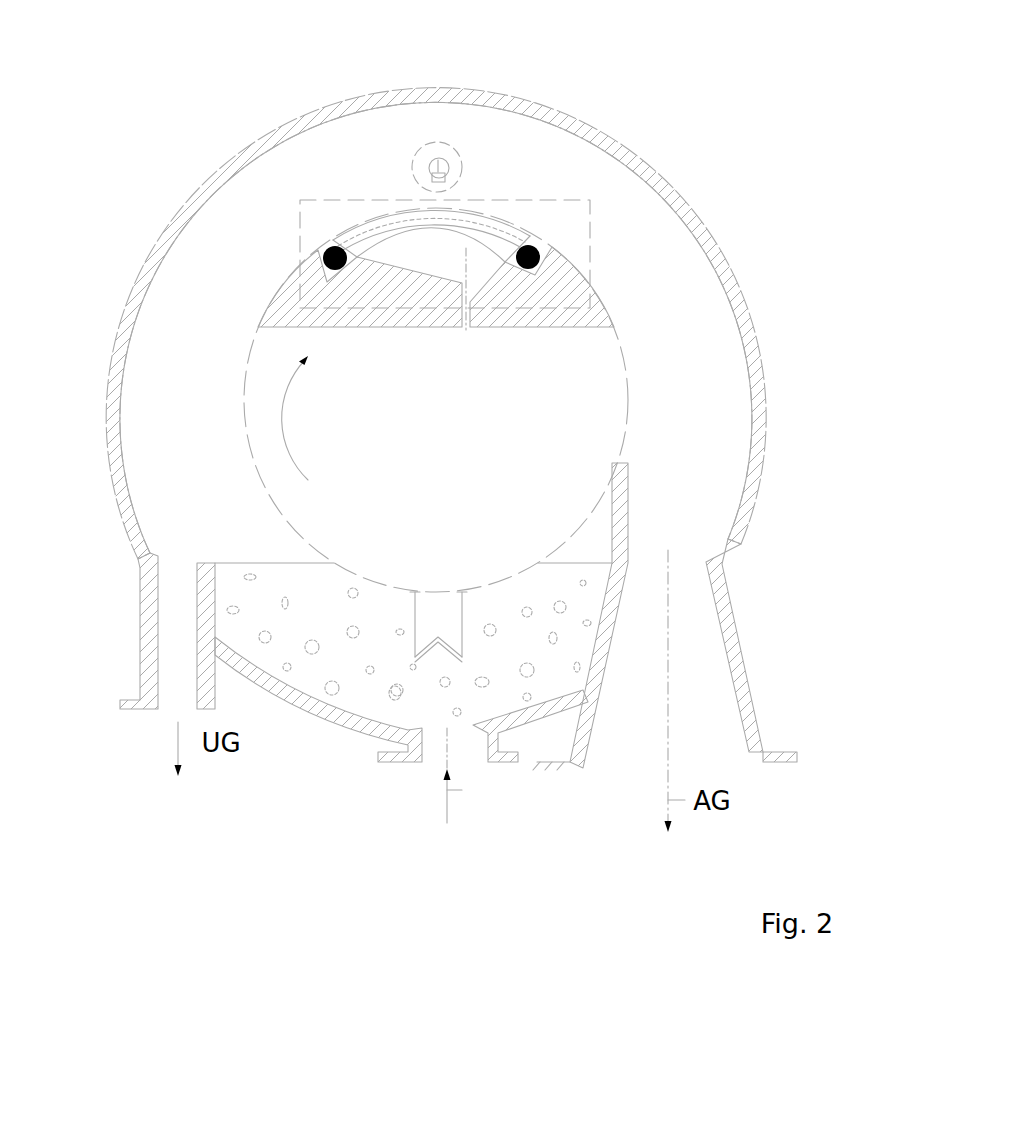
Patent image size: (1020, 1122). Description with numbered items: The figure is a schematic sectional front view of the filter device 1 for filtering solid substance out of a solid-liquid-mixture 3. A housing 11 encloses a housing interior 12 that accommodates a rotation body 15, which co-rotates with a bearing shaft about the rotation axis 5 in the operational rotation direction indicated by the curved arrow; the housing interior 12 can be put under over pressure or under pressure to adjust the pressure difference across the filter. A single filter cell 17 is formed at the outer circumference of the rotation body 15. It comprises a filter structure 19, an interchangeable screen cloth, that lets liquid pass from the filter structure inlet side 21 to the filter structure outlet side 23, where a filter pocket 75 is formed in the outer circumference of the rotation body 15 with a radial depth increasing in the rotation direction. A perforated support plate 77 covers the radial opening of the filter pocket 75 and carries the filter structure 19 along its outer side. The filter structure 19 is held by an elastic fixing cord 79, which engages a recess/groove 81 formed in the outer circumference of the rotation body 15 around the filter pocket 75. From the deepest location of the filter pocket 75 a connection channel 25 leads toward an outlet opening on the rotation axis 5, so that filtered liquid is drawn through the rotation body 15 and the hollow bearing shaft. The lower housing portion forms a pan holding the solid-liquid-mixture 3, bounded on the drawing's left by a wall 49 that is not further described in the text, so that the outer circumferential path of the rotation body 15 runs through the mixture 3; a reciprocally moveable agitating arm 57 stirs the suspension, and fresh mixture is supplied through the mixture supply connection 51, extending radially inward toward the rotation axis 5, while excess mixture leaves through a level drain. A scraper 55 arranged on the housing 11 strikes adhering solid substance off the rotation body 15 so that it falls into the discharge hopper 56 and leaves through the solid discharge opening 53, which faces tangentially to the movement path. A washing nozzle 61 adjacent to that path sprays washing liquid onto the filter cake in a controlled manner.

The filter device 1 is at (405, 398).
The solid-liquid-mixture 3 is at (290, 627).
The rotation axis 5 is at (437, 408).
The housing 11 is at (668, 195).
The housing interior 12 is at (185, 370).
The rotation body 15 is at (558, 373).
The filter cell 17 is at (478, 137).
The filter structure 19 is at (493, 207).
The filter structure inlet side 21 is at (340, 231).
The filter structure outlet side 23 is at (413, 243).
The connection channel 25 is at (545, 270).
The container wall 49 is at (205, 572).
The mixture supply connection 51 is at (415, 758).
The solid discharge opening 53 is at (753, 753).
The scraper 55 is at (630, 482).
The discharge hopper 56 is at (730, 538).
The agitating arm 57 is at (423, 653).
The washing nozzle 61 is at (438, 158).
The filter pocket 75 is at (441, 247).
The perforated support plate 77 is at (378, 222).
The fixing cord 79 is at (537, 247).
The recess/groove 81 is at (472, 302).